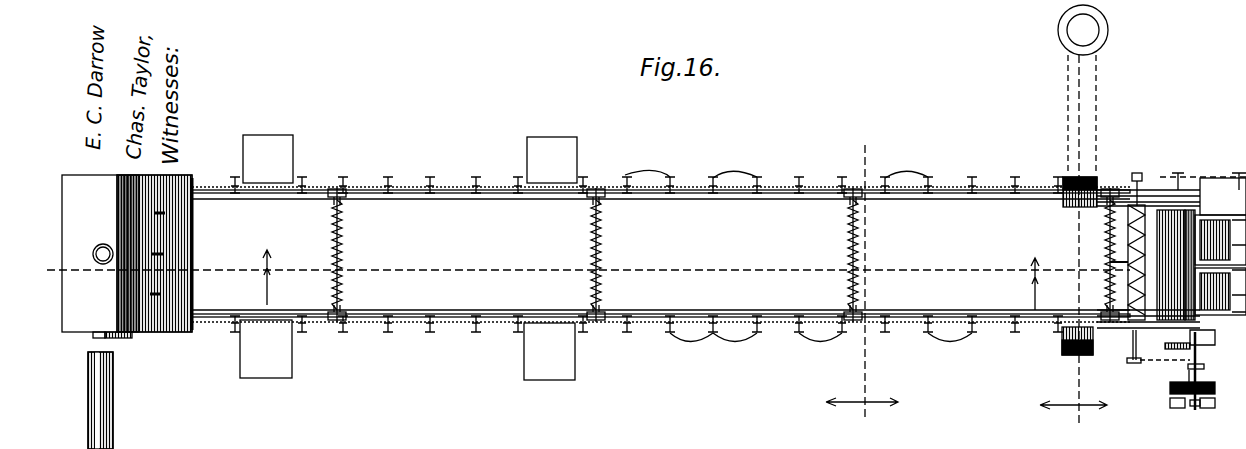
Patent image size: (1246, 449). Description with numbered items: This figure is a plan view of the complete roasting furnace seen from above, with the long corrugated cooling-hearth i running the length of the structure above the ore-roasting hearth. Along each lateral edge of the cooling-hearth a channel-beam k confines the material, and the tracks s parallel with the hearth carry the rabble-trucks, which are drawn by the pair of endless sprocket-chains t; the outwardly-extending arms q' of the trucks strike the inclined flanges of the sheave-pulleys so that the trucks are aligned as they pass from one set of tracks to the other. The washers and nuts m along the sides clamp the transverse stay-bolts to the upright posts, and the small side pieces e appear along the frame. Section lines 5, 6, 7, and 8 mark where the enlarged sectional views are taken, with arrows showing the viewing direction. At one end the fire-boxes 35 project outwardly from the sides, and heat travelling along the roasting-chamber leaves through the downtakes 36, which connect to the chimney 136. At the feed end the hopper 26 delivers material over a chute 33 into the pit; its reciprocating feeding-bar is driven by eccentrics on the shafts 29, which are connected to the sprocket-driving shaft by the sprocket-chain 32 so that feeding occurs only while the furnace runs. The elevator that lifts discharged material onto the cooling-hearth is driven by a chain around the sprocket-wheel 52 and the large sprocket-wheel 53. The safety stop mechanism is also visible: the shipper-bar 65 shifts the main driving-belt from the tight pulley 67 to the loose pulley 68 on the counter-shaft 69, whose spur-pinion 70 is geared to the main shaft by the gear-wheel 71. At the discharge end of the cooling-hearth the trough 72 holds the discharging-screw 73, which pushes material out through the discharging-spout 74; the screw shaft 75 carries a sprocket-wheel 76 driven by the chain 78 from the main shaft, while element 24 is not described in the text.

The fire-boxes 35 is at (408, 257).
The downtakes 36 is at (1065, 178).
The sprocket-wheel 52 is at (95, 336).
The large sprocket-wheel 53 is at (128, 337).
The section line 7 is at (282, 277).
The section line 6 is at (1023, 284).
The section line 5 is at (862, 292).
The section line 8 is at (1073, 252).
The chimney 136 is at (1098, 44).
The discharging-spout 74 is at (1136, 179).
The sprocket-chain 32 is at (1196, 177).
The shafts 29 is at (1223, 197).
The discharging-screw 73 is at (1145, 228).
The chute 33 is at (1176, 265).
The upper roll housing 24 is at (1220, 240).
The hopper 26 is at (1220, 267).
The trough 72 is at (1110, 262).
The spur-pinion 70 is at (1200, 345).
The shaft 75 is at (1132, 355).
The sprocket-wheel 76 is at (1127, 363).
The gear-wheel 71 is at (1167, 352).
The chain 78 is at (1162, 360).
The counter-shaft 69 is at (1199, 370).
The shipper-bar 65 is at (1204, 388).
The tight pulley 67 is at (1170, 387).
The loose pulley 68 is at (1175, 398).
The cooling-hearth i is at (588, 254).
The sprocket-chains t is at (352, 190).
The outwardly-extending arms q' is at (723, 255).
The washers and nuts m is at (776, 262).
The connecting links e is at (821, 259).
The tracks s is at (1025, 200).
The channel-beams k is at (1050, 200).